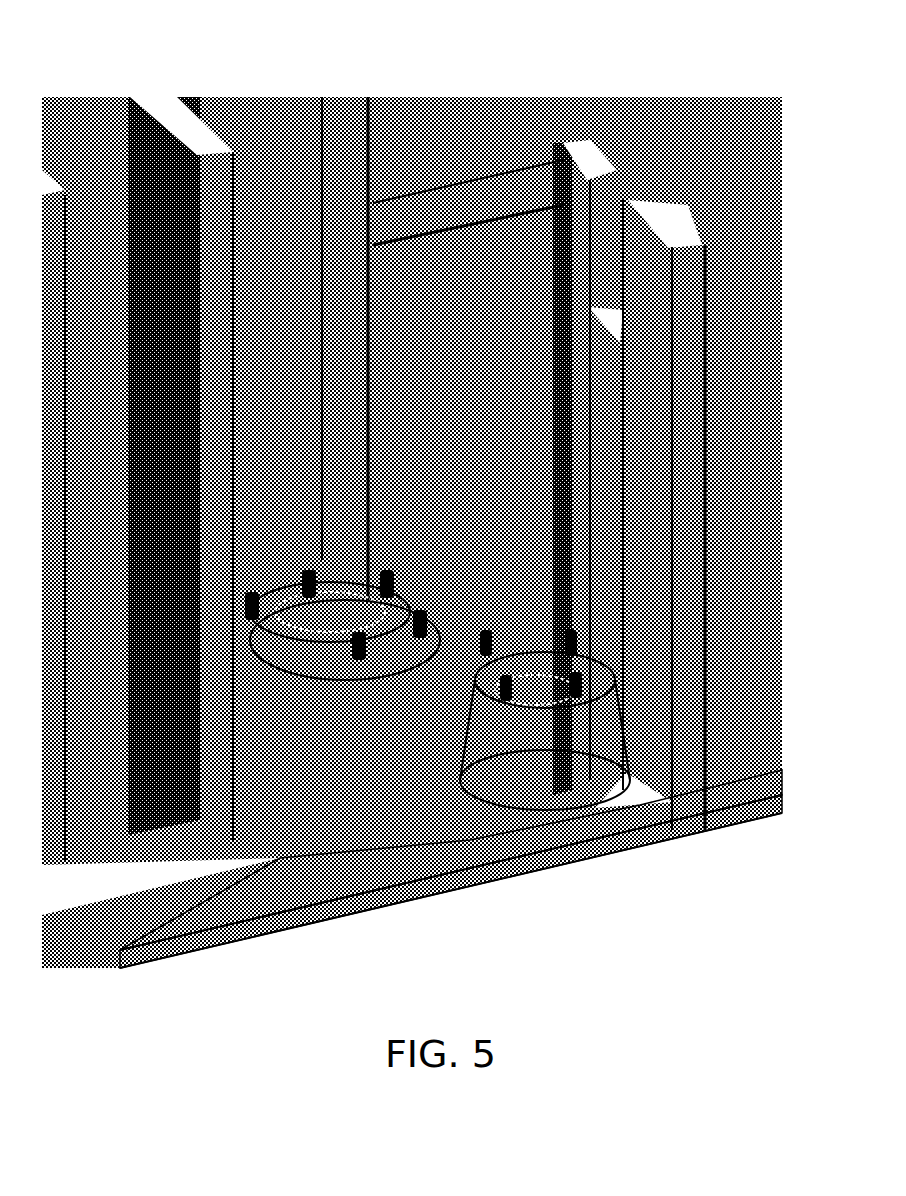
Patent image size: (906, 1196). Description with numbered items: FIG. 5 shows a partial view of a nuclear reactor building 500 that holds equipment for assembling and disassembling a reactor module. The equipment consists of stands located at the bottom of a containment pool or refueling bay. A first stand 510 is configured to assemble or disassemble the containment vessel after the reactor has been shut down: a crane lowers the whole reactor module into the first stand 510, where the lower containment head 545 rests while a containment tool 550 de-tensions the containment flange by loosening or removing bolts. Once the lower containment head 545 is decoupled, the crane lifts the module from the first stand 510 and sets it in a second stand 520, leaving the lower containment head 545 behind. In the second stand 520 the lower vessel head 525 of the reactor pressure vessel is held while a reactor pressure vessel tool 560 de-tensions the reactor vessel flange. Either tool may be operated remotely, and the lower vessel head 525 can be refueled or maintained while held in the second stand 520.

The nuclear reactor building 500 is at (688, 75).
The first stand 510 is at (497, 887).
The second stand 520 is at (630, 840).
The lower vessel head 525 is at (522, 627).
The lower containment head 545 is at (417, 597).
The containment tool 550 is at (387, 583).
The reactor pressure vessel tool 560 is at (450, 625).